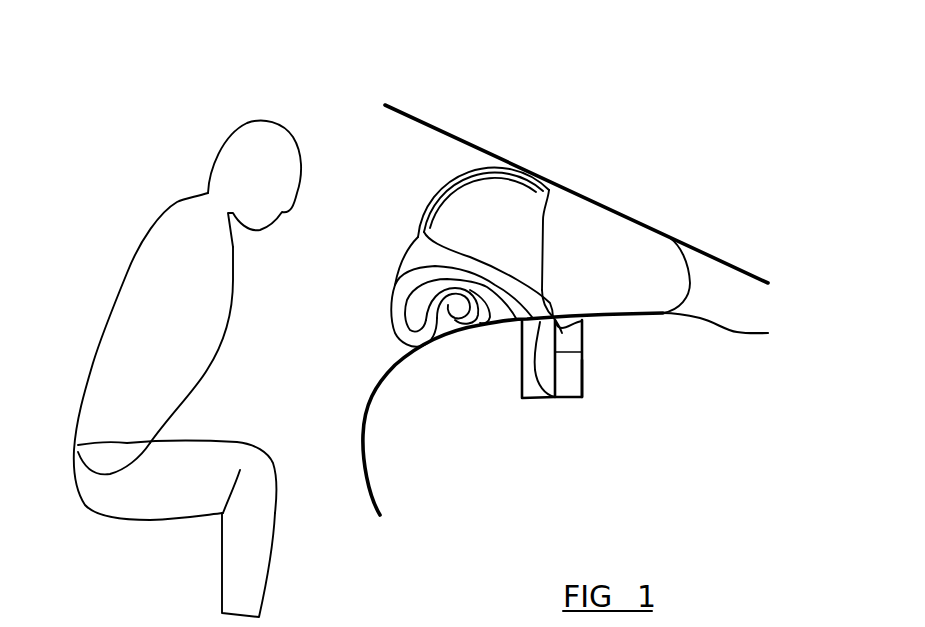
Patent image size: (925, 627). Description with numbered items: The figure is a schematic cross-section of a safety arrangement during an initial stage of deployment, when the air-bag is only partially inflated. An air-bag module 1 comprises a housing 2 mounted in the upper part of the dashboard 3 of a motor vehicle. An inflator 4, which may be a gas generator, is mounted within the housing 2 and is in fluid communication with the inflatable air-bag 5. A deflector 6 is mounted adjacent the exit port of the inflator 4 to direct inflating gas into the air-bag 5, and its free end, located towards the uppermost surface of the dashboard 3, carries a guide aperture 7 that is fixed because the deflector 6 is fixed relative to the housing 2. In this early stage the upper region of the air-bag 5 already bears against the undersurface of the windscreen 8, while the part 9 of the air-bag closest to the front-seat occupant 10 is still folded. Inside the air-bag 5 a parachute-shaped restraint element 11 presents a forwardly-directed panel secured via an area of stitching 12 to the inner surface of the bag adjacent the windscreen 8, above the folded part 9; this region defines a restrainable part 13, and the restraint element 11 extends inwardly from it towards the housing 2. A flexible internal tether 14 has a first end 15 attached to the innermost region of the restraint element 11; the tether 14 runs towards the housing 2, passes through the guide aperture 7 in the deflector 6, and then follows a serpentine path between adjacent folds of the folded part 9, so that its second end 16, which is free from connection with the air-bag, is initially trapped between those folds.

The air-bag module 1 is at (550, 420).
The housing 2 is at (528, 400).
The dashboard 3 is at (393, 391).
The inflator 4 is at (582, 380).
The air-bag 5 is at (690, 290).
The deflector 6 is at (582, 348).
The guide aperture 7 is at (582, 332).
The windscreen 8 is at (717, 258).
The folded part 9 is at (393, 305).
The front-seat occupant 10 is at (125, 287).
The restraint element 11 is at (527, 221).
The area of stitching 12 is at (478, 174).
The restrainable part 13 is at (436, 206).
The internal tether 14 is at (423, 272).
The first end 15 is at (543, 290).
The second end 16 is at (487, 323).